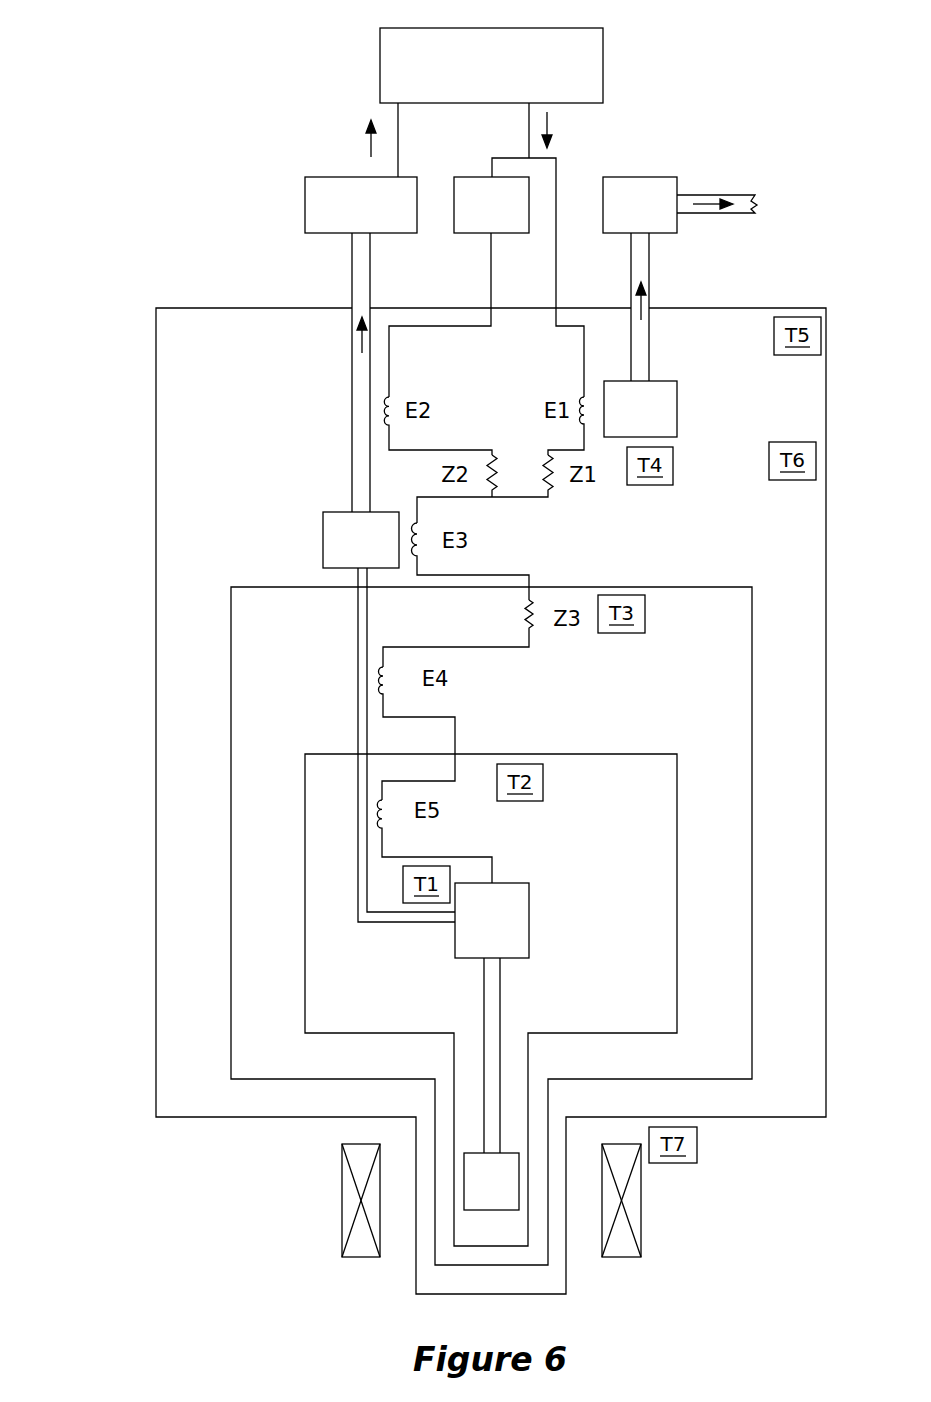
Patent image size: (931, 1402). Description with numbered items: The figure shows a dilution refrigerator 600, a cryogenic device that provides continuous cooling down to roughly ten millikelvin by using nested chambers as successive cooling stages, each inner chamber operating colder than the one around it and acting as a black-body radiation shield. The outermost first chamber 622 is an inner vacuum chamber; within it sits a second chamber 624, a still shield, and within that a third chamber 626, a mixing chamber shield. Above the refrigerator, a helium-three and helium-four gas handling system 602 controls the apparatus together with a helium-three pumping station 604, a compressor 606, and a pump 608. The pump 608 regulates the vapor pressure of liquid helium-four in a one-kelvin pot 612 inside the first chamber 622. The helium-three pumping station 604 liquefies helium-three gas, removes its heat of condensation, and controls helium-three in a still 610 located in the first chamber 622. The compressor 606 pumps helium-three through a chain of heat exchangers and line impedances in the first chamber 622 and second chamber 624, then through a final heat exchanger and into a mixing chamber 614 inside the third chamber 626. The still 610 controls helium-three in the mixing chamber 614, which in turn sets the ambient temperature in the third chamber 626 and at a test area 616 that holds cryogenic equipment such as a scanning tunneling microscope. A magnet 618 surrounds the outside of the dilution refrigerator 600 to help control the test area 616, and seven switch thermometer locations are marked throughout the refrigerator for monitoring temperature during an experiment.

The dilution refrigerator 600 is at (128, 42).
The helium-3 and helium-4 gas handling system 602 is at (470, 78).
The helium-3 pumping station 604 is at (340, 218).
The compressor 606 is at (470, 218).
The pump 608 is at (619, 218).
The still 610 is at (361, 540).
The 1K pot 612 is at (619, 422).
The mixing chamber 614 is at (471, 924).
The test area 616 is at (470, 1186).
The magnet 618 is at (316, 1175).
The first chamber 622 is at (707, 353).
The second chamber 624 is at (685, 635).
The third chamber 626 is at (610, 803).